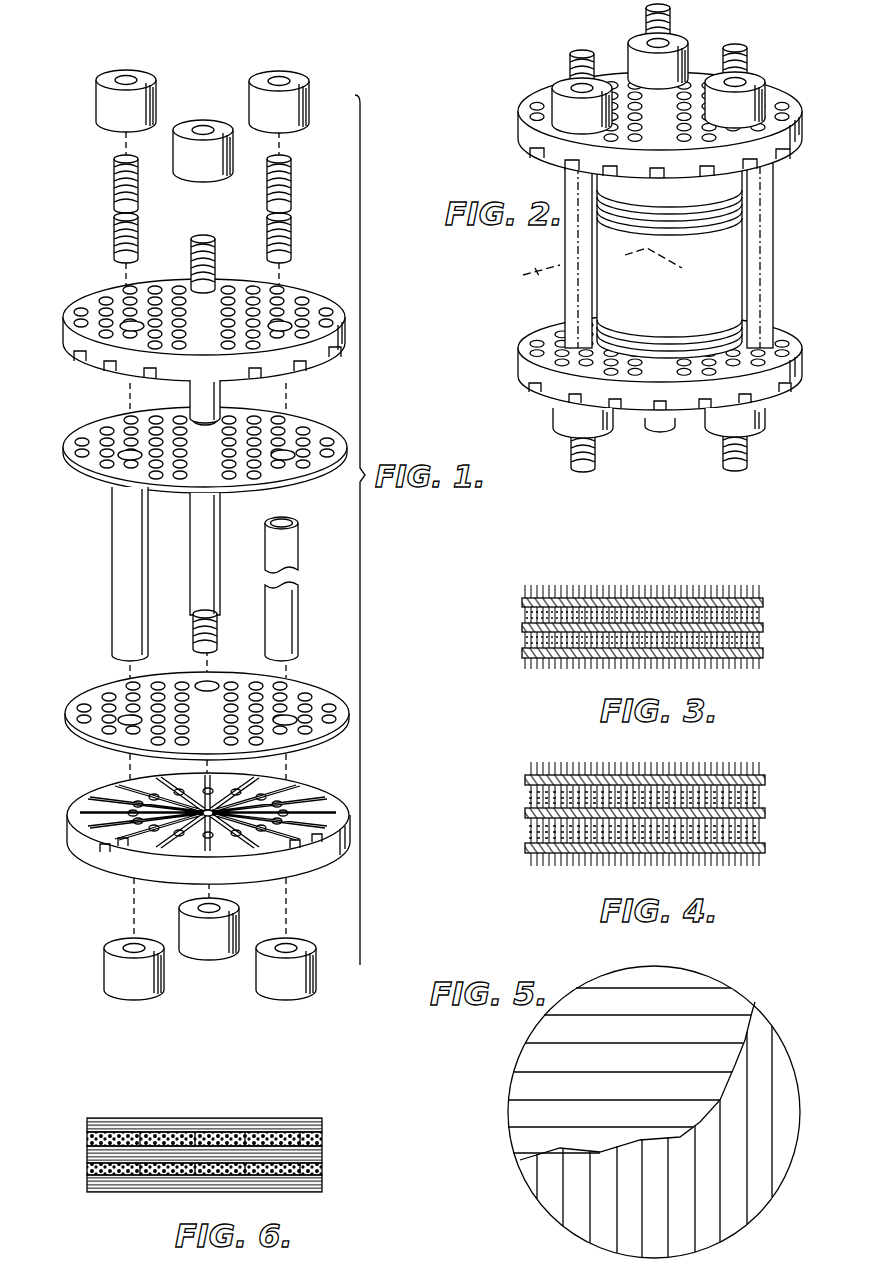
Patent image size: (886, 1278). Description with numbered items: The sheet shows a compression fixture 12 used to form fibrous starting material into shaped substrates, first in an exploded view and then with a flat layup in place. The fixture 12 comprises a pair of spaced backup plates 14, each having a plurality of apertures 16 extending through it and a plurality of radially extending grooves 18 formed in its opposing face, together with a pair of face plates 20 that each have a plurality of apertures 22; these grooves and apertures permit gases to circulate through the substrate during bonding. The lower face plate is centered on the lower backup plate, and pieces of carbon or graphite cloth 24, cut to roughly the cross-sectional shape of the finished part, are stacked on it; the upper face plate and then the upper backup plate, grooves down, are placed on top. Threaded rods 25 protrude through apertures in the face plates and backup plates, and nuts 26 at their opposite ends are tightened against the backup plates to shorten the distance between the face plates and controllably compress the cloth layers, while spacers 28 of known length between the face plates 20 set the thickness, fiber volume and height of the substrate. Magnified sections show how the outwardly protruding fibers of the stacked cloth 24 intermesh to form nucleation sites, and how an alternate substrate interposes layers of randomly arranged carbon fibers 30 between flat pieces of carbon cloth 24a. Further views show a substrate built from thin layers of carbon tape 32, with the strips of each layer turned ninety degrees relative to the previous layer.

In FIG. 1, the compression fixture 12 is at (351, 341).
In FIG. 2, the compression fixture 12 is at (783, 222).
In FIG. 1, the backup plates 14 is at (182, 338).
In FIG. 2, the backup plates 14 is at (686, 128).
In FIG. 1, the apertures 16 is at (115, 297).
In FIG. 2, the apertures 16 is at (780, 112).
In FIG. 1, the radially extending grooves 18 is at (105, 372).
In FIG. 2, the radially extending grooves 18 is at (762, 175).
In FIG. 1, the face plates 20 is at (216, 444).
In FIG. 2, the face plates 20 is at (795, 158).
In FIG. 1, the apertures 22 is at (88, 445).
In FIG. 2, the apertures 22 is at (540, 347).
In FIG. 2, the carbon or graphite cloth 24 is at (735, 318).
In FIG. 3, the carbon or graphite cloth 24 is at (765, 604).
In FIG. 4, the flat pieces of carbon cloth 24a is at (637, 814).
In FIG. 1, the threaded rods 25 is at (118, 218).
In FIG. 2, the threaded rods 25 is at (575, 52).
In FIG. 1, the nuts 26 is at (157, 90).
In FIG. 2, the nuts 26 is at (630, 62).
In FIG. 1, the spacers 28 is at (194, 552).
In FIG. 2, the spacers 28 is at (565, 243).
In FIG. 4, the randomly arranged carbon fibers 30 is at (768, 800).
In FIG. 5, the carbon tape 32 is at (735, 1000).
In FIG. 6, the carbon tape 32 is at (268, 1133).